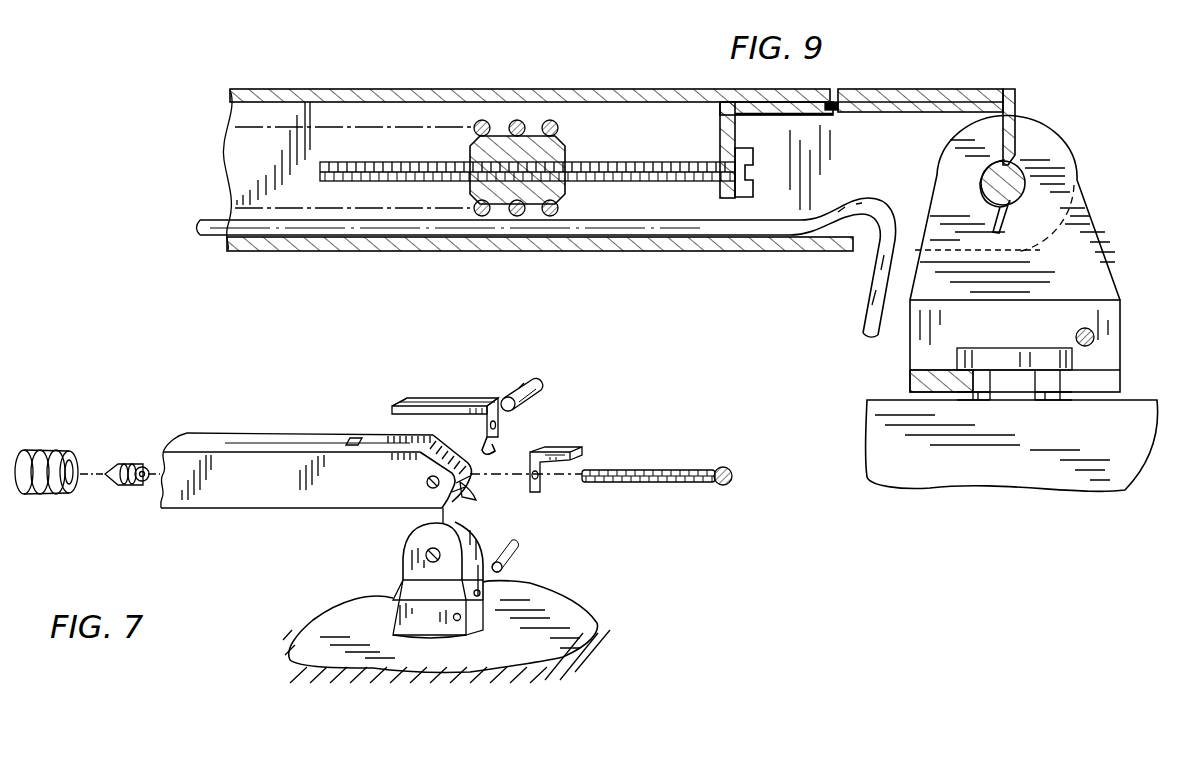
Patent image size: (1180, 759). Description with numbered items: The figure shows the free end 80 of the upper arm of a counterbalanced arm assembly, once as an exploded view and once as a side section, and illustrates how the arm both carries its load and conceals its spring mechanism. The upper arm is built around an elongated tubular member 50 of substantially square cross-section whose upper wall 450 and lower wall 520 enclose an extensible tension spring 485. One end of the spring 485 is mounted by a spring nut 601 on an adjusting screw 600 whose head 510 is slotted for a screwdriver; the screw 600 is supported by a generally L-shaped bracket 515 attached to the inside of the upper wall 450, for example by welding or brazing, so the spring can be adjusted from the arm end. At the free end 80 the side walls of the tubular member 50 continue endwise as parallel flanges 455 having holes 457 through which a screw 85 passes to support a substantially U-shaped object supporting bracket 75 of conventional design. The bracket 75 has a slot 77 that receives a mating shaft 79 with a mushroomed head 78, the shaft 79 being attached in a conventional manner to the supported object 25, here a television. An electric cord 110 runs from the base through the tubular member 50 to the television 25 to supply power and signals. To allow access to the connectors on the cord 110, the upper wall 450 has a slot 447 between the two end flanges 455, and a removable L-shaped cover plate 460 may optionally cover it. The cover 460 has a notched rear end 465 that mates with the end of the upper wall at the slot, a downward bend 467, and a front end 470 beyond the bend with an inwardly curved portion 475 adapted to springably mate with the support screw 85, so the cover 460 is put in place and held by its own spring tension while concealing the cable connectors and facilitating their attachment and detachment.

In FIG. 9, the object 25 is at (1083, 467).
In FIG. 7, the object 25 is at (563, 603).
In FIG. 7, the tubular member 50 is at (213, 432).
In FIG. 9, the object supporting bracket 75 is at (1108, 266).
In FIG. 7, the object supporting bracket 75 is at (468, 540).
In FIG. 9, the slot 77 is at (978, 403).
In FIG. 7, the slot 77 is at (478, 624).
In FIG. 9, the mushroomed head 78 is at (1032, 357).
In FIG. 9, the shaft 79 is at (990, 370).
In FIG. 7, the free end 80 is at (472, 475).
In FIG. 9, the screw 85 is at (1020, 168).
In FIG. 7, the screw 85 is at (520, 384).
In FIG. 9, the electric cord 110 is at (770, 240).
In FIG. 7, the slot 447 is at (370, 440).
In FIG. 9, the upper wall 450 is at (355, 88).
In FIG. 7, the upper wall 450 is at (277, 424).
In FIG. 7, the parallel flanges 455 is at (458, 500).
In FIG. 7, the holes 457 is at (428, 487).
In FIG. 9, the L-shaped cover plate 460 is at (1007, 103).
In FIG. 7, the L-shaped cover plate 460 is at (480, 403).
In FIG. 9, the notched rear end 465 is at (838, 108).
In FIG. 7, the notched rear end 465 is at (403, 408).
In FIG. 7, the downward bend 467 is at (498, 422).
In FIG. 9, the front end 470 is at (1015, 150).
In FIG. 7, the front end 470 is at (513, 413).
In FIG. 9, the inwardly curved portion 475 is at (982, 171).
In FIG. 7, the inwardly curved portion 475 is at (490, 450).
In FIG. 9, the extensible tension spring 485 is at (478, 120).
In FIG. 7, the extensible tension spring 485 is at (68, 438).
In FIG. 9, the head 510 is at (750, 160).
In FIG. 7, the head 510 is at (748, 450).
In FIG. 9, the L-shaped bracket 515 is at (723, 130).
In FIG. 7, the L-shaped bracket 515 is at (560, 449).
In FIG. 9, the lower wall 520 is at (368, 251).
In FIG. 7, the lower wall 520 is at (229, 509).
In FIG. 9, the adjusting screw 600 is at (621, 166).
In FIG. 7, the adjusting screw 600 is at (669, 470).
In FIG. 9, the spring nut 601 is at (538, 135).
In FIG. 7, the spring nut 601 is at (143, 446).